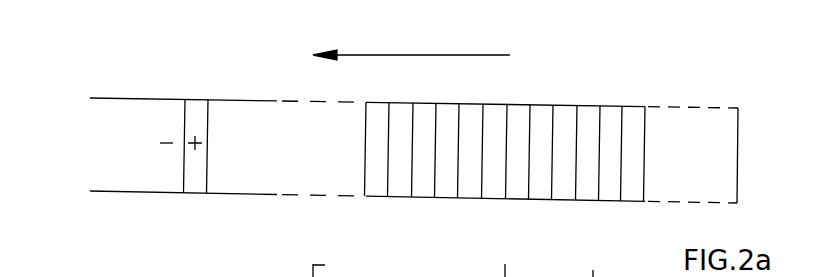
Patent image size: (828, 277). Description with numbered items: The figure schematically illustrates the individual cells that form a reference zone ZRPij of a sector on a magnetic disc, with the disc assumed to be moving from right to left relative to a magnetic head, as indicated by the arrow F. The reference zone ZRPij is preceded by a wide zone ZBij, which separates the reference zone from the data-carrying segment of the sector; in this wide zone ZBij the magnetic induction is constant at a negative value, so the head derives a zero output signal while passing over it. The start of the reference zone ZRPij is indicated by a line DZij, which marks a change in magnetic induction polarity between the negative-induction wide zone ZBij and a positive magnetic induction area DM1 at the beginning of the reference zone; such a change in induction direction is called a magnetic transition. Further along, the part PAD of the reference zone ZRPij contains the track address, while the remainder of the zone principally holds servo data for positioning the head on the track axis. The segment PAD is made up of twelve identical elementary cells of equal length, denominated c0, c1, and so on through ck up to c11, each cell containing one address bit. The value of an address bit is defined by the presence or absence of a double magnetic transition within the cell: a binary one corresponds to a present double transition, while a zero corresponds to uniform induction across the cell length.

The line indicating start of reference zone DZij is at (199, 88).
The wide zone ZBij is at (138, 192).
The positive magnetic induction area DM1 is at (185, 192).
The reference zone ZRPij is at (332, 196).
The address segment PAD is at (424, 197).
The first elementary cell c0 is at (370, 102).
The second elementary cell c1 is at (397, 102).
The k-th elementary cell ck is at (463, 103).
The twelfth elementary cell c11 is at (625, 106).
The arrow indicating disc movement F is at (411, 46).